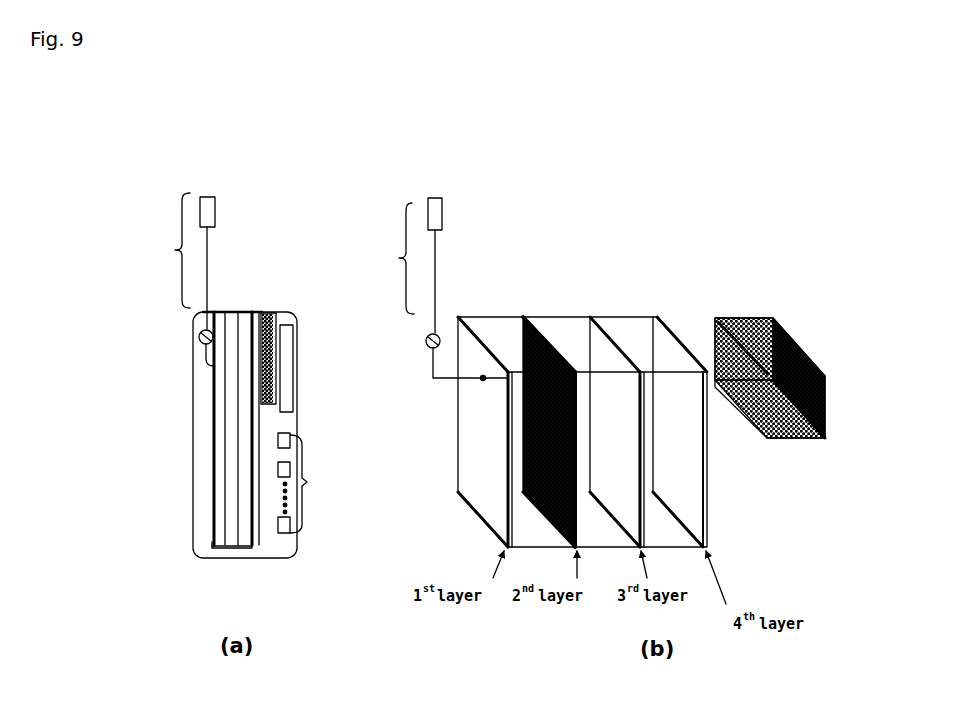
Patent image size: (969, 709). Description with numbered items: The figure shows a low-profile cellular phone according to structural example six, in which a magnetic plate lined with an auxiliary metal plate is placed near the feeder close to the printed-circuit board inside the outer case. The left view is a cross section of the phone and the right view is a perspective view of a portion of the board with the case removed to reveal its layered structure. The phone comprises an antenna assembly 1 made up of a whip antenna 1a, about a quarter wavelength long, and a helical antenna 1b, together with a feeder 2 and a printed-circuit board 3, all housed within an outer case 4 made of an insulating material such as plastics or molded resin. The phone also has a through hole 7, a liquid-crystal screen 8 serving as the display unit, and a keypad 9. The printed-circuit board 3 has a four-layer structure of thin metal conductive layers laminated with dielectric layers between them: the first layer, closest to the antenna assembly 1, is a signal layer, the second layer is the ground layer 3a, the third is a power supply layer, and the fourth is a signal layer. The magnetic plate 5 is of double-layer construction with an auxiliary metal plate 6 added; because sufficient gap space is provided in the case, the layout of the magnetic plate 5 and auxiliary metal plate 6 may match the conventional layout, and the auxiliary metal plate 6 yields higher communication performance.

The antenna assembly 1 is at (170, 250).
The whip antenna 1a is at (207, 266).
The helical antenna 1b is at (207, 197).
The feeder 2 is at (199, 337).
The printed-circuit board 3 is at (232, 553).
The ground layer 3a is at (220, 510).
The outer case 4 is at (193, 476).
The magnetic plate 5 is at (269, 316).
The auxiliary metal plate 6 is at (278, 316).
The through hole 7 is at (214, 366).
The liquid-crystal screen 8 is at (287, 347).
The keypad 9 is at (307, 482).